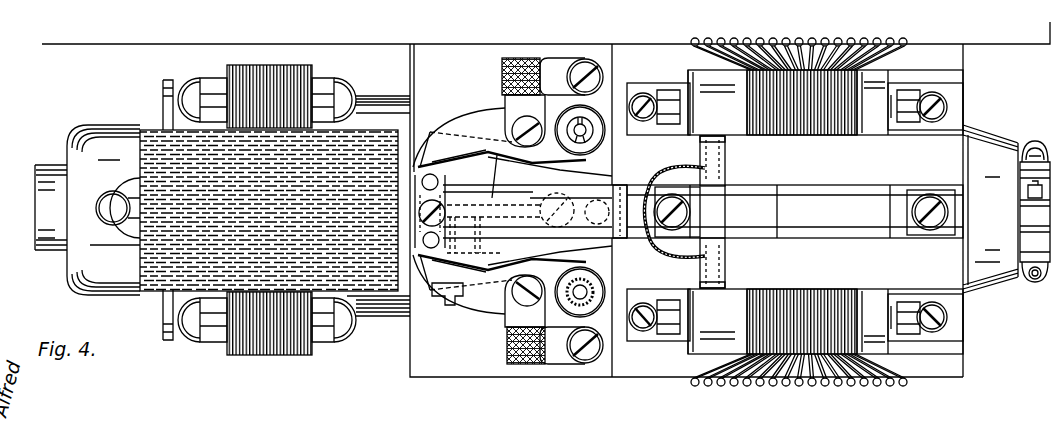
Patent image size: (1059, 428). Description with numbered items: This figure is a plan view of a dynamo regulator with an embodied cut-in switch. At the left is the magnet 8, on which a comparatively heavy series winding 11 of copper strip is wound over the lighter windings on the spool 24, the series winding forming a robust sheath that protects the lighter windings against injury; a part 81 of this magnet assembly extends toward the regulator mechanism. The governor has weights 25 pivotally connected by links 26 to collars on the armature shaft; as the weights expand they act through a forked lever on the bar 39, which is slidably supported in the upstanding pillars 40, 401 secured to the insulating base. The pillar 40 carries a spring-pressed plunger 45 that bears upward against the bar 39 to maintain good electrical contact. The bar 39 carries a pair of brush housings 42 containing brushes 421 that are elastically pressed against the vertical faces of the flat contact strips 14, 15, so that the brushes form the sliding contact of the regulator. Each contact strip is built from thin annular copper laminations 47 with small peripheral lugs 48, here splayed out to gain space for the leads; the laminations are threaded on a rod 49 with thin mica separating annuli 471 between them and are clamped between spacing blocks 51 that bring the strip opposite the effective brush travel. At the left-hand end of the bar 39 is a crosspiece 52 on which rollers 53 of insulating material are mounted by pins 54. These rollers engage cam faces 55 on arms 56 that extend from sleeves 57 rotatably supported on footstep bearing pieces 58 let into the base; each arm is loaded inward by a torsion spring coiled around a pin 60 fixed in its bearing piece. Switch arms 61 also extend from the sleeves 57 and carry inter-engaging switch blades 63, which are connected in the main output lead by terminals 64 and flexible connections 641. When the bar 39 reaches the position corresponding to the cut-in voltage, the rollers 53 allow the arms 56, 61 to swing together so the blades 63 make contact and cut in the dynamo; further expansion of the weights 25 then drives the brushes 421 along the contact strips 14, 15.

The magnet 8 is at (227, 67).
The brush holder shaft 81 is at (371, 96).
The series winding 11 is at (172, 157).
The spool 24 is at (372, 292).
The contact strip 14 is at (845, 134).
The contact strip 15 is at (828, 291).
The weights 25 is at (1010, 222).
The links 26 is at (1021, 210).
The bar 39 is at (795, 211).
The pillar 40 is at (620, 236).
The pillar 401 is at (901, 201).
The brush housings 42 is at (723, 172).
The brushes 421 is at (719, 137).
The plunger 45 is at (621, 193).
The annular laminations 47 is at (813, 136).
The separating annuli 471 is at (848, 56).
The peripheral lugs 48 is at (799, 45).
The rod 49 is at (940, 108).
The spacing blocks 51 is at (893, 281).
The crosspiece 52 is at (418, 258).
The rollers 53 is at (466, 211).
The pins 54 is at (423, 173).
The cam faces 55 is at (494, 172).
The arms 56 is at (478, 131).
The sleeves 57 is at (592, 117).
The footstep bearing pieces 58 is at (604, 64).
The pin 60 is at (593, 138).
The switch arms 61 is at (546, 168).
The switch blades 63 is at (497, 213).
The terminals 64 is at (579, 62).
The flexible connections 641 is at (497, 349).